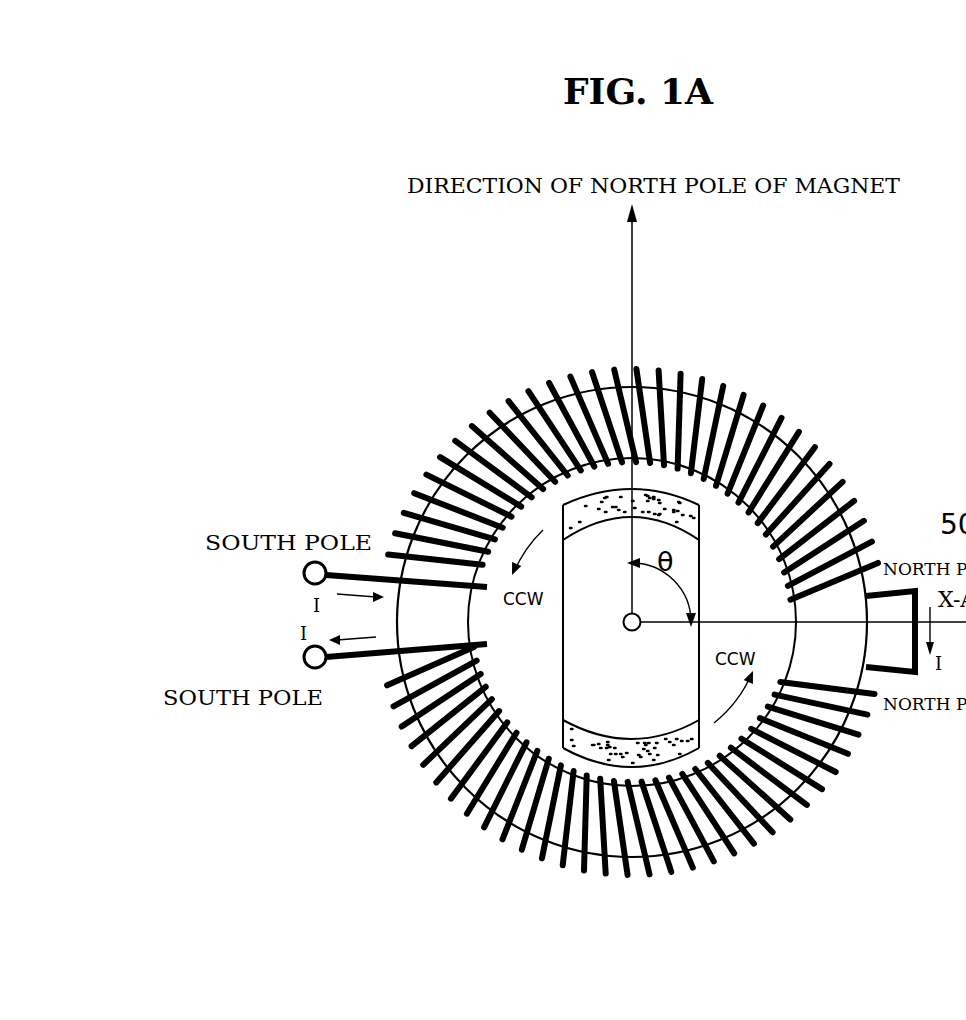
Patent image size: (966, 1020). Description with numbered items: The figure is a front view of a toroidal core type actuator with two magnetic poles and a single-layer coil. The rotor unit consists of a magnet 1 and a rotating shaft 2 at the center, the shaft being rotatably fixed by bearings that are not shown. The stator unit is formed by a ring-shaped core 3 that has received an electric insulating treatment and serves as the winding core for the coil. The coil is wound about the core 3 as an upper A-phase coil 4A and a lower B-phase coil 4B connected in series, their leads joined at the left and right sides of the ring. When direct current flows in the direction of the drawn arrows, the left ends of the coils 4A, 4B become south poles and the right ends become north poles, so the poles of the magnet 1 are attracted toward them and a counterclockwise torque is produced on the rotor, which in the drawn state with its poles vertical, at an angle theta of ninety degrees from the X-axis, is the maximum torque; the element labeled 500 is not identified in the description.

The magnet 1 is at (677, 512).
The rotating shaft 2 is at (645, 610).
The core 3 is at (432, 622).
The upper coil (A-phase coil) 4A is at (498, 398).
The lower coil (B-phase coil) 4B is at (715, 868).
The rotor 500 is at (670, 672).